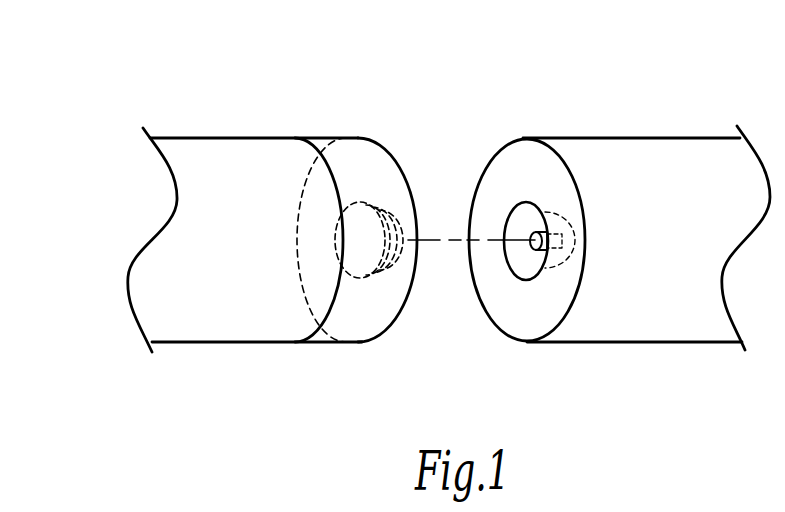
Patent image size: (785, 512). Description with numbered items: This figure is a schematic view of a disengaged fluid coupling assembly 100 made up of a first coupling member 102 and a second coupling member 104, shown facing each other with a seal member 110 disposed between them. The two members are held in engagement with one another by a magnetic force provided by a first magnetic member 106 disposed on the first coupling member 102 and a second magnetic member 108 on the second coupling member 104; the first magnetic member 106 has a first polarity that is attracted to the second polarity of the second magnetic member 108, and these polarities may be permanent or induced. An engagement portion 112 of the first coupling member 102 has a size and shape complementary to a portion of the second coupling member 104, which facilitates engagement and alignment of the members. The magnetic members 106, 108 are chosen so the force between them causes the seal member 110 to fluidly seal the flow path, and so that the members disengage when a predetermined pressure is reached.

The fluid coupling assembly 100 is at (117, 70).
The first coupling member 102 is at (357, 138).
The second coupling member 104 is at (521, 138).
The first magnetic member 106 is at (333, 343).
The second magnetic member 108 is at (525, 312).
The seal member 110 is at (383, 200).
The engagement portion 112 is at (398, 259).